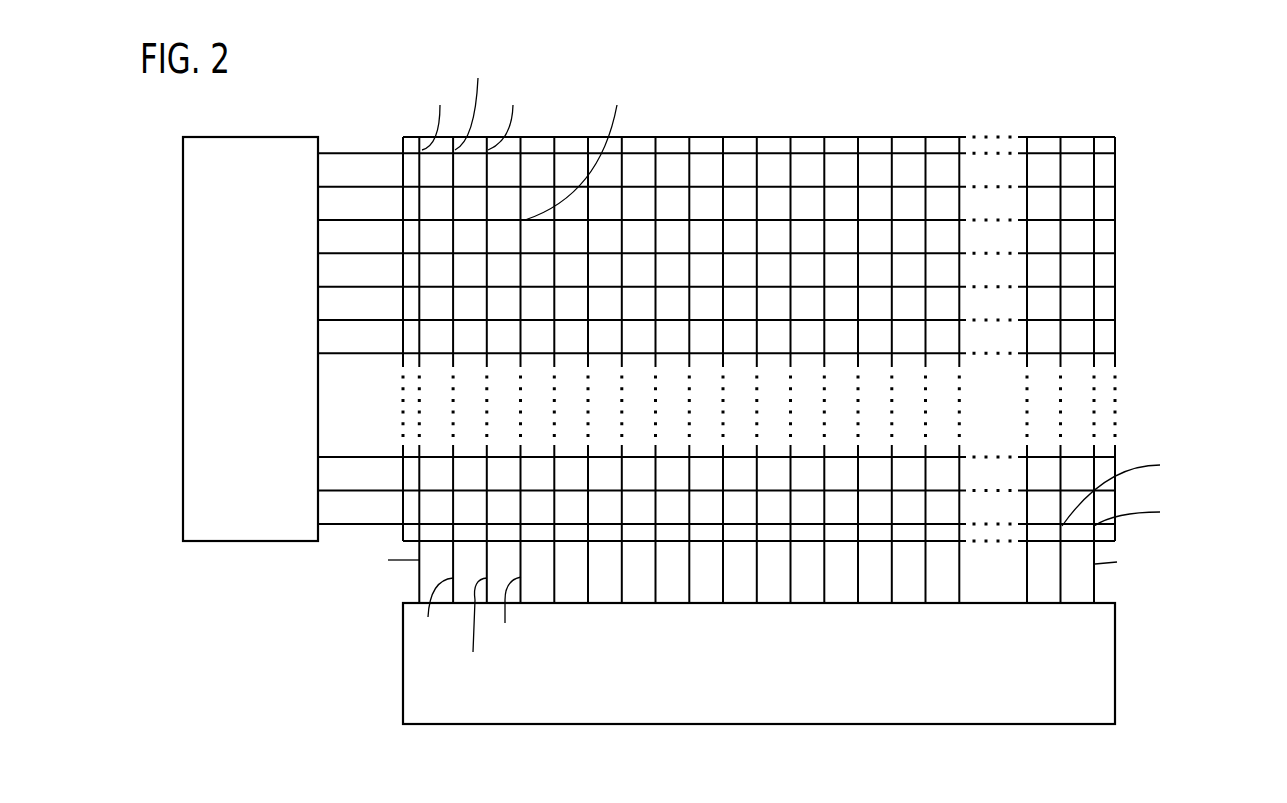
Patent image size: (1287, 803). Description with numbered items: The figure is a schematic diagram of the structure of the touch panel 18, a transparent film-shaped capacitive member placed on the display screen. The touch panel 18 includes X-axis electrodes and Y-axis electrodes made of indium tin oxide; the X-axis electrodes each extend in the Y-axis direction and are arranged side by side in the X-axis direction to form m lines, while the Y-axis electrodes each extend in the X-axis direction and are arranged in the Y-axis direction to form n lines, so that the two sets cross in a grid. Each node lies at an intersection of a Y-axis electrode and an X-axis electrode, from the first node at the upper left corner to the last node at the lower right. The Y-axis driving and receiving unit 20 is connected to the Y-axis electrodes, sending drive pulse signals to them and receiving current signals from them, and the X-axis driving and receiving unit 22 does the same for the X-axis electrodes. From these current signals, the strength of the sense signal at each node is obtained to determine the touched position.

The touch panel 18 is at (1017, 117).
The Y-axis driving and receiving unit 20 is at (183, 224).
The X-axis driving and receiving unit 22 is at (403, 672).